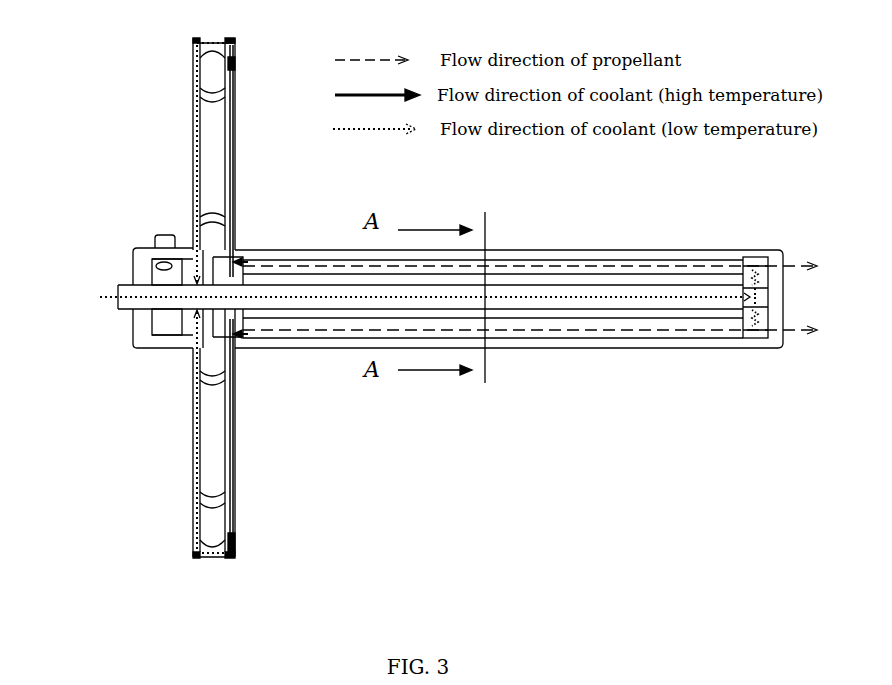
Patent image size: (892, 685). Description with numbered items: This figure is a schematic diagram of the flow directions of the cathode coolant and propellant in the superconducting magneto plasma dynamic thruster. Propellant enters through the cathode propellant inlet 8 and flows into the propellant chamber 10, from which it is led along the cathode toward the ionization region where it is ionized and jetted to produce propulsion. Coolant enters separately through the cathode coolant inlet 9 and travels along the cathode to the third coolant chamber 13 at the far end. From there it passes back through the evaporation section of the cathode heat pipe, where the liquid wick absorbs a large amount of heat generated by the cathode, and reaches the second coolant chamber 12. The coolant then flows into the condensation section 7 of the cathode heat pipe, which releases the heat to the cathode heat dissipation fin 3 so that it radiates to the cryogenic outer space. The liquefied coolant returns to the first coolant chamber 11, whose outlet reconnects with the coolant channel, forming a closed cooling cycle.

The cathode heat dissipation fin 3 is at (197, 80).
The condensation section of the cathode heat pipe 7 is at (195, 40).
The cathode propellant inlet 8 is at (163, 242).
The cathode coolant inlet 9 is at (120, 287).
The propellant chamber 10 is at (160, 327).
The first coolant chamber 11 is at (197, 323).
The second coolant chamber 12 is at (228, 325).
The third coolant chamber 13 is at (757, 330).